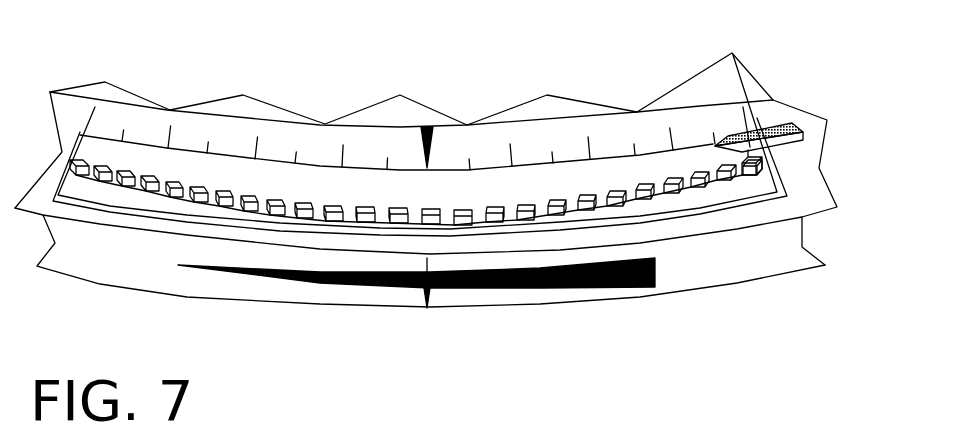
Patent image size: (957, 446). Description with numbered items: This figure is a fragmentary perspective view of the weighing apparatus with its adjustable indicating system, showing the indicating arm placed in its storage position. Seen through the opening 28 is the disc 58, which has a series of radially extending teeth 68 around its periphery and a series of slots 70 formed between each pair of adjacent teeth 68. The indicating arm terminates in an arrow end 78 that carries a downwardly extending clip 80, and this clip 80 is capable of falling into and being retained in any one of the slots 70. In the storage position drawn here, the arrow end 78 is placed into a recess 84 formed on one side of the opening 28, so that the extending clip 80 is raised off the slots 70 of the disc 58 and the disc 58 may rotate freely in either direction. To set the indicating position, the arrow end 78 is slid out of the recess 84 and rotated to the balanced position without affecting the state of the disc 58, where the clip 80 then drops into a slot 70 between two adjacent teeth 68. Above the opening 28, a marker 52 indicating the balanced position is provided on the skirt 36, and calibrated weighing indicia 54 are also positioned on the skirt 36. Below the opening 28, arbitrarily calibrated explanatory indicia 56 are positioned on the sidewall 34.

The opening 28 is at (88, 192).
The sidewall 34 is at (55, 253).
The skirt 36 is at (72, 120).
The marker 52 is at (422, 128).
The weighing indicia 54 is at (358, 148).
The explanatory indicia 56 is at (436, 292).
The disc 58 is at (278, 180).
The teeth 68 is at (652, 186).
The slots 70 is at (587, 193).
The arrow end 78 is at (760, 152).
The extending clip 80 is at (765, 165).
The recess 84 is at (789, 126).